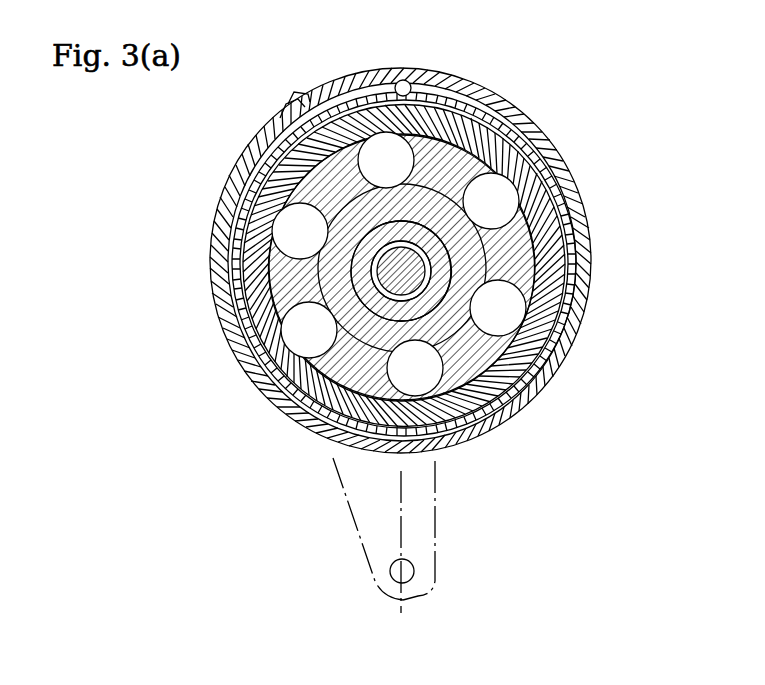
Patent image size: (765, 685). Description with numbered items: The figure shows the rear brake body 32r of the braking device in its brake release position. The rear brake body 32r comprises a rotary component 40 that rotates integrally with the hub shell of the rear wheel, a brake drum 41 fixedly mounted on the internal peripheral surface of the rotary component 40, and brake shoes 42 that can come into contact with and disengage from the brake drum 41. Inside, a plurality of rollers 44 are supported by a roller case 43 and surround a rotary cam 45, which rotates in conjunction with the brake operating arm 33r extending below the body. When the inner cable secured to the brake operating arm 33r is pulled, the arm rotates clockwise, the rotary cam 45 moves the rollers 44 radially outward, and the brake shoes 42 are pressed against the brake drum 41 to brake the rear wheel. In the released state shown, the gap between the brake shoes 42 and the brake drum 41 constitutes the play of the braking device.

The rear brake body 32r is at (588, 182).
The brake operating arm 33r is at (428, 537).
The rotary component 40 is at (577, 275).
The brake drum 41 is at (540, 128).
The brake shoes 42 is at (418, 62).
The roller case 43 is at (518, 232).
The rollers 44 is at (503, 302).
The rotary cam 45 is at (553, 360).